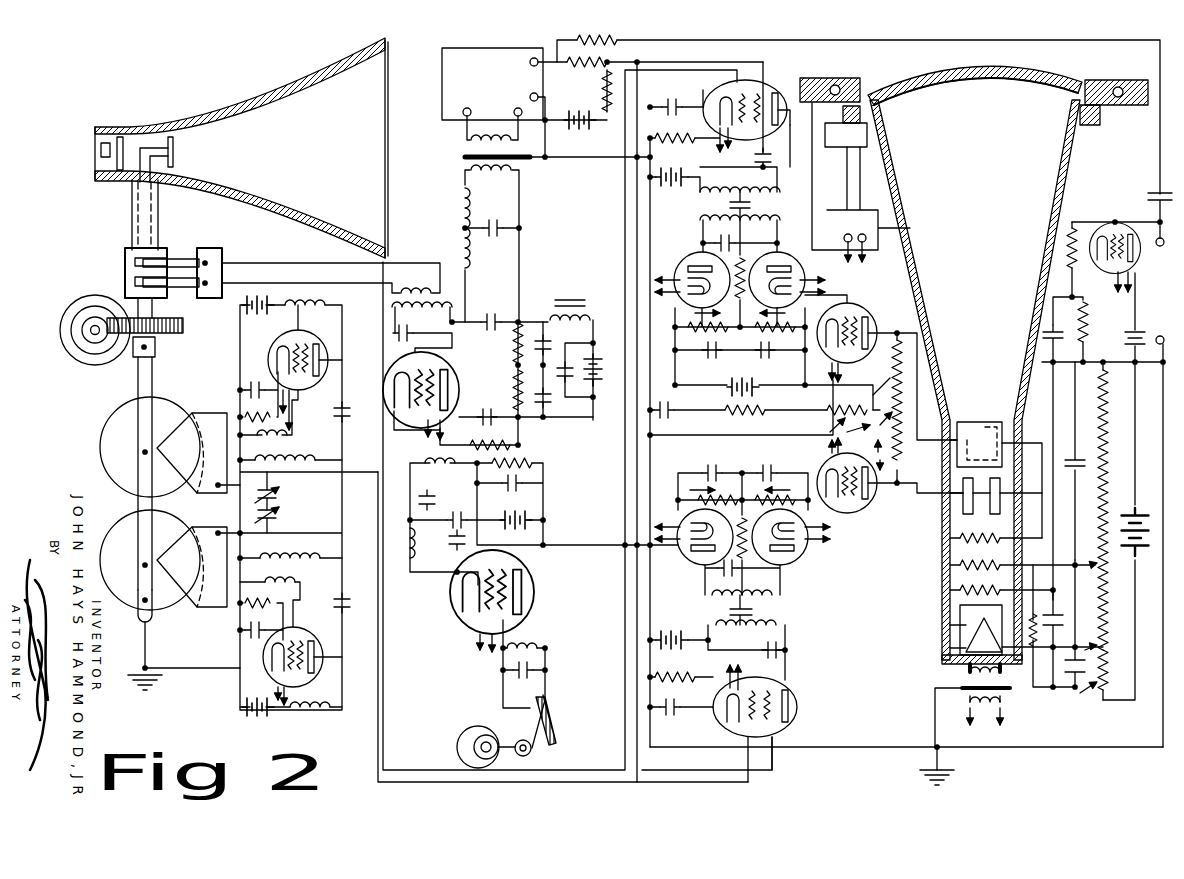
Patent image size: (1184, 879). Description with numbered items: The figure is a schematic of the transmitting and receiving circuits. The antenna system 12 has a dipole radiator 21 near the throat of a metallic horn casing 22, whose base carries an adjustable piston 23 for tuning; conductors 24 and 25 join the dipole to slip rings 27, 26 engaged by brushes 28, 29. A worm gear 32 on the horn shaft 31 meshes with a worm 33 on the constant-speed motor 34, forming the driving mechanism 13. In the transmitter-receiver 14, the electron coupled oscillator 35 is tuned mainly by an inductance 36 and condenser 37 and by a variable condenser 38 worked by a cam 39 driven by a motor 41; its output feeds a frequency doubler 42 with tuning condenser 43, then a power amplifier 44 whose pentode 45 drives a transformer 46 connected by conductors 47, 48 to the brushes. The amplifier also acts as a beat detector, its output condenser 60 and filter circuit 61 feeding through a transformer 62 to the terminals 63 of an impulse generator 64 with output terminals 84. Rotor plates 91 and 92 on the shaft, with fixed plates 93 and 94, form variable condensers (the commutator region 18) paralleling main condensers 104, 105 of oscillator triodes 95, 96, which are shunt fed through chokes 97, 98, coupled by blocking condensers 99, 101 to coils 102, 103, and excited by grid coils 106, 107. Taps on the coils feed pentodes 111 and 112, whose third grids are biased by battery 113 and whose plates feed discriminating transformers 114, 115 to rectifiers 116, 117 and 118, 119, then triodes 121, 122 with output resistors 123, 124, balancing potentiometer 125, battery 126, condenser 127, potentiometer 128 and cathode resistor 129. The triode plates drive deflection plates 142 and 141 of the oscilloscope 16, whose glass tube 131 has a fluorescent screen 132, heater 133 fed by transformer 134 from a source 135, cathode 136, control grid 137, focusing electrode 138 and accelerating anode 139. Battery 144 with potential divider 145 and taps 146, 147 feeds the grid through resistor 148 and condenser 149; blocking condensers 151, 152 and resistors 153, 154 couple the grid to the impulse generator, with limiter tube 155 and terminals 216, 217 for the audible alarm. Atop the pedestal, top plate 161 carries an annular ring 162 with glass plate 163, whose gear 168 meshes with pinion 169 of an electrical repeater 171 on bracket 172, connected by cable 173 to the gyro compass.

The directional horn antenna transmitting and receiving system 12 is at (221, 96).
The metallic horn casing 22 is at (300, 84).
The adjustable piston 23 is at (101, 152).
The dipole radiator 21 is at (176, 153).
The conductor 24 is at (132, 198).
The conductor 25 is at (158, 198).
The slip ring 26 is at (125, 264).
The slip ring 27 is at (125, 287).
The brush 28 is at (186, 258).
The brush 29 is at (210, 266).
The conductor of transmission line 47 is at (295, 262).
The conductor of transmission line 48 is at (333, 282).
The driving mechanism 13 is at (111, 386).
The motor 34 is at (76, 318).
The worm 33 is at (82, 336).
The worm gear 32 is at (184, 328).
The horn shaft 31 is at (155, 316).
The condenser rotor plate 91 is at (121, 428).
The fixed plate 93 is at (205, 412).
The commutator 18 is at (186, 517).
The condenser rotor plate 92 is at (118, 596).
The fixed plate 94 is at (190, 608).
The choke 97 is at (312, 301).
The oscillator triode 95 is at (275, 343).
The grid coil 106 is at (285, 433).
The coil 102 is at (288, 456).
The blocking condenser 99 is at (352, 412).
The main condenser 104 is at (282, 494).
The main condenser 105 is at (282, 516).
The coil 103 is at (298, 562).
The grid coil 107 is at (275, 586).
The blocking condenser 101 is at (338, 603).
The oscillator triode 96 is at (318, 640).
The choke 98 is at (300, 712).
The impulse generator 64 is at (442, 76).
The input terminals 63 is at (515, 110).
The output terminals 84 is at (540, 84).
The battery 113 is at (575, 125).
The resistor 154 is at (596, 38).
The transformer 62 is at (463, 158).
The filter circuit 61 is at (502, 264).
The condenser 60 is at (492, 312).
The transformer 46 is at (395, 314).
The combined radio transmitter and receiver 14 is at (582, 284).
The power amplifier 44 is at (503, 394).
The pentode 45 is at (402, 430).
The tuning condenser 43 is at (455, 514).
The frequency doubler 42 is at (413, 556).
The electron coupled oscillator 35 is at (450, 597).
The inductance 36 is at (542, 649).
The condenser 37 is at (505, 672).
The motor 41 is at (458, 742).
The variable condenser 38 is at (553, 732).
The cam 39 is at (532, 753).
The pentode 111 is at (712, 92).
The bracket 172 is at (780, 170).
The frequency discriminating transformer 114 is at (752, 207).
The rectifier 116 is at (687, 258).
The rectifier 117 is at (785, 260).
The battery 126 is at (727, 390).
The condenser 127 is at (670, 416).
The cathode biasing resistor 129 is at (757, 415).
The potentiometer 128 is at (830, 405).
The triode 121 is at (872, 318).
The output resistor 123 is at (885, 366).
The balancing potentiometer 125 is at (868, 418).
The output resistor 124 is at (898, 456).
The triode 122 is at (870, 517).
The rectifier 118 is at (686, 553).
The rectifier 119 is at (792, 556).
The frequency discriminating transformer 115 is at (755, 608).
The pentode 112 is at (798, 707).
The top plate 161 is at (820, 80).
The glass plate 163 is at (987, 68).
The fluorescent screen 132 is at (972, 94).
The annular ring 162 is at (1105, 80).
The gear 168 is at (1100, 120).
The glass tube 131 is at (1068, 174).
The oscilloscope 16 is at (973, 178).
The pinion 169 is at (843, 116).
The electrical repeater 171 is at (866, 212).
The cable 173 is at (857, 265).
The deflection plates 142 is at (992, 422).
The deflection plates 141 is at (992, 515).
The accelerating anode 139 is at (950, 538).
The focusing electrode 138 is at (950, 565).
The control grid 137 is at (950, 590).
The cathode 136 is at (950, 623).
The heater element 133 is at (950, 648).
The transformer 134 is at (1002, 690).
The source 135 is at (1000, 722).
The blocking condenser 152 is at (1147, 199).
The terminal 216 is at (1161, 250).
The terminal 217 is at (1160, 336).
The limiter tube 155 is at (1138, 258).
The resistor 153 is at (1080, 273).
The blocking condenser 151 is at (1068, 326).
The battery 144 is at (1135, 505).
The potential divider 145 is at (1093, 488).
The adjustable tap 147 is at (1094, 560).
The control grid resistor 148 is at (1034, 600).
The condenser 149 is at (1063, 620).
The adjustable tap 146 is at (1092, 700).